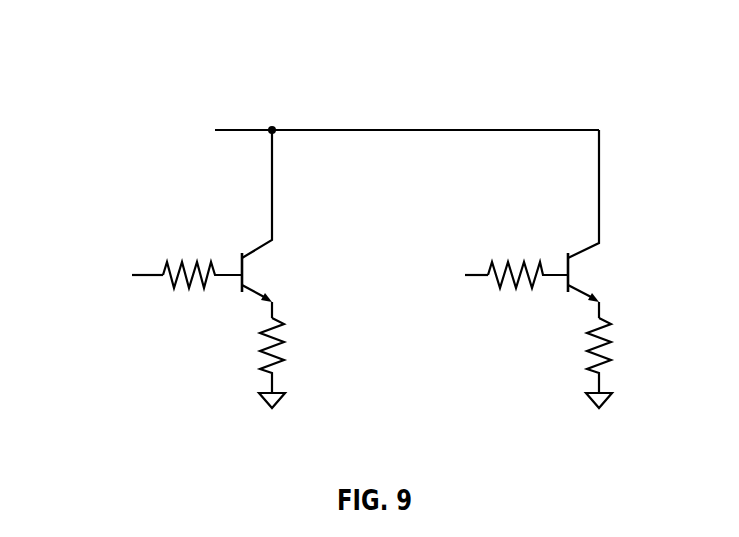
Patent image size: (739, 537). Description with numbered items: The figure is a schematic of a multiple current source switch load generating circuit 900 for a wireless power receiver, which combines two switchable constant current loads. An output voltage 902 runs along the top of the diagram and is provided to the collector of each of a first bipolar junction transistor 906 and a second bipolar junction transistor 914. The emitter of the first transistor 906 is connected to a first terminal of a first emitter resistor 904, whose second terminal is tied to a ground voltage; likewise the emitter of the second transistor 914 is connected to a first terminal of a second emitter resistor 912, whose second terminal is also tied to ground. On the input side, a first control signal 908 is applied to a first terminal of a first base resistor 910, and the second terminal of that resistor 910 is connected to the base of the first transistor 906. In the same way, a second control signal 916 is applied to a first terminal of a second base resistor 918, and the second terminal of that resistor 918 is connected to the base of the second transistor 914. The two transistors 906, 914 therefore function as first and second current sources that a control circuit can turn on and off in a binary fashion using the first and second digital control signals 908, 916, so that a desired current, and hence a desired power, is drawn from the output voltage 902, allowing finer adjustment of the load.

The multiple current source switch load generating circuit 900 is at (120, 62).
The voltage Vout 902 is at (193, 110).
The resistor R1 904 is at (302, 328).
The first BJT Q1 906 is at (288, 248).
The first control signal 908 is at (73, 260).
The resistor R2 910 is at (198, 238).
The resistor R3 912 is at (632, 335).
The second BJT Q2 914 is at (618, 262).
The second control signal 916 is at (397, 263).
The resistor R4 918 is at (523, 238).